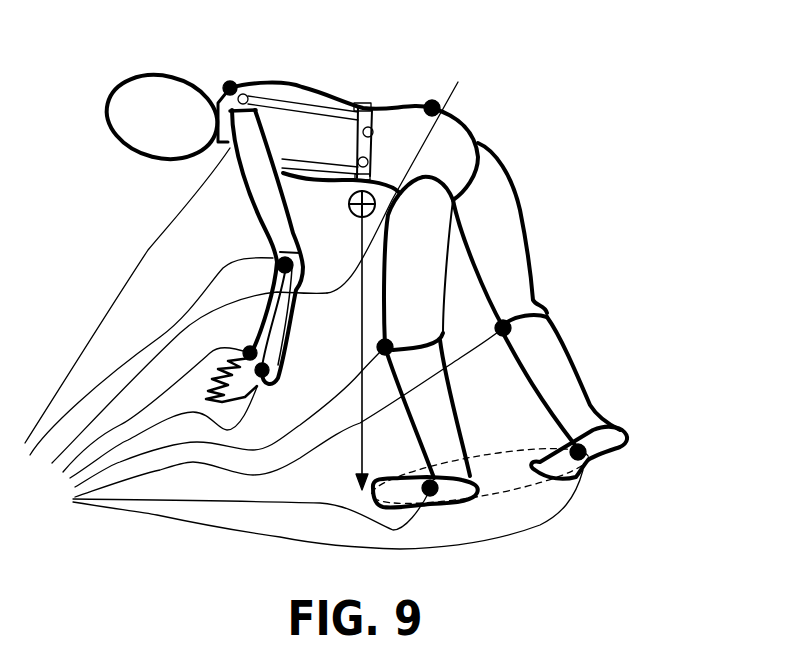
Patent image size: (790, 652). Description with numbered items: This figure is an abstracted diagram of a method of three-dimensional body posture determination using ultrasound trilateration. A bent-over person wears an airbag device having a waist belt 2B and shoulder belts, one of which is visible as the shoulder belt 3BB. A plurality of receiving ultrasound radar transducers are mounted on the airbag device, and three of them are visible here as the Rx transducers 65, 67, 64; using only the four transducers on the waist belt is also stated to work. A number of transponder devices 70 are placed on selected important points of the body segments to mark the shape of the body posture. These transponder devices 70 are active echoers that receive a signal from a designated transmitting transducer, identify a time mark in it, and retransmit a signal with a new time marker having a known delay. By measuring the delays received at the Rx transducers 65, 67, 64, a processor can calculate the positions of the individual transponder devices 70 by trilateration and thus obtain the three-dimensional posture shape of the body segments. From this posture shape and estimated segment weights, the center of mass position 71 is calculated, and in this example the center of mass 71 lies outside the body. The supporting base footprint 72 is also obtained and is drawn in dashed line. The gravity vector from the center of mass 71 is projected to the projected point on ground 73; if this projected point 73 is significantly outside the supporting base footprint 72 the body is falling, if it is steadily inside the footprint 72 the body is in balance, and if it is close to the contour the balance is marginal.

The Rx ultrasound radar transducer 64 is at (247, 94).
The shoulder belt 3BB is at (224, 174).
The Rx ultrasound radar transducer 67 is at (373, 128).
The waist belt 2B is at (403, 178).
The Rx ultrasound radar transducer 65 is at (466, 136).
The center of mass position 71 is at (360, 215).
The supporting base footprint 72 is at (527, 450).
The transponder devices 70 is at (299, 348).
The projected point on ground 73 is at (360, 488).